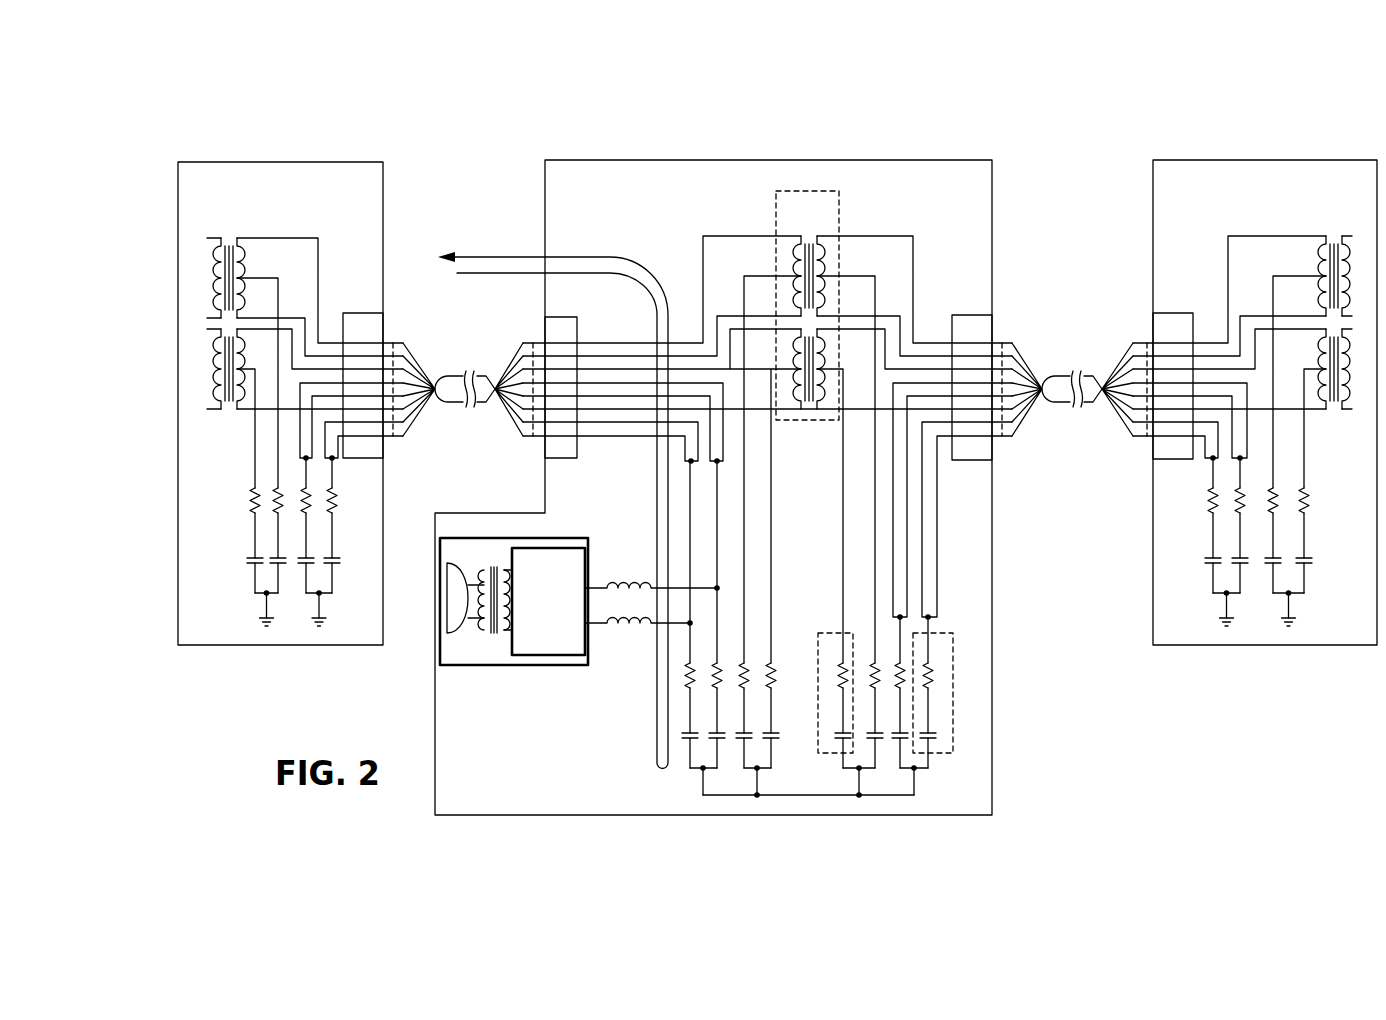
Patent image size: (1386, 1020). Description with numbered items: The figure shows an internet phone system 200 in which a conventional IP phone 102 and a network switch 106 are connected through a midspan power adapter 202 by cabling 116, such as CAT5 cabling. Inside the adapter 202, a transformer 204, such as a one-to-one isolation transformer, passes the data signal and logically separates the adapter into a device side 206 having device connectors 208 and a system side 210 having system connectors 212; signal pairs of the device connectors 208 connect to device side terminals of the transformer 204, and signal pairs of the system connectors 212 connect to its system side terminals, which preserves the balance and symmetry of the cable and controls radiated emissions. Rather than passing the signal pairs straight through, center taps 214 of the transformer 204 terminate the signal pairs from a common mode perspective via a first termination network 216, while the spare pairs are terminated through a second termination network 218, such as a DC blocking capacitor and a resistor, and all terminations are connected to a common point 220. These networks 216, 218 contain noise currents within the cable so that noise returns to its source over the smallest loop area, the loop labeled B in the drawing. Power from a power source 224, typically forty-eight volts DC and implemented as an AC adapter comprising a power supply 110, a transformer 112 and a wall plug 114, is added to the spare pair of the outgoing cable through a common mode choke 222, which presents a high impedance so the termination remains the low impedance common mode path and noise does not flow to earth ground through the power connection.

The internet phone system 200 is at (955, 90).
The IP phone 102 is at (358, 162).
The network switch 106 is at (1185, 162).
The midspan power adapter 202 is at (992, 180).
The transformer 204 is at (840, 190).
The device side 206 is at (800, 156).
The device connectors 208 is at (500, 442).
The system side 210 is at (990, 156).
The system connectors 212 is at (1029, 449).
The center taps 214 is at (822, 364).
The first termination network 216 is at (832, 633).
The second termination network 218 is at (955, 668).
The common point 220 is at (822, 797).
The common mode choke 222 is at (648, 577).
The power source 224 is at (535, 664).
The power supply 110 is at (572, 642).
The transformer 112 is at (494, 634).
The wall plug 114 is at (447, 622).
The cabling 116 is at (484, 376).